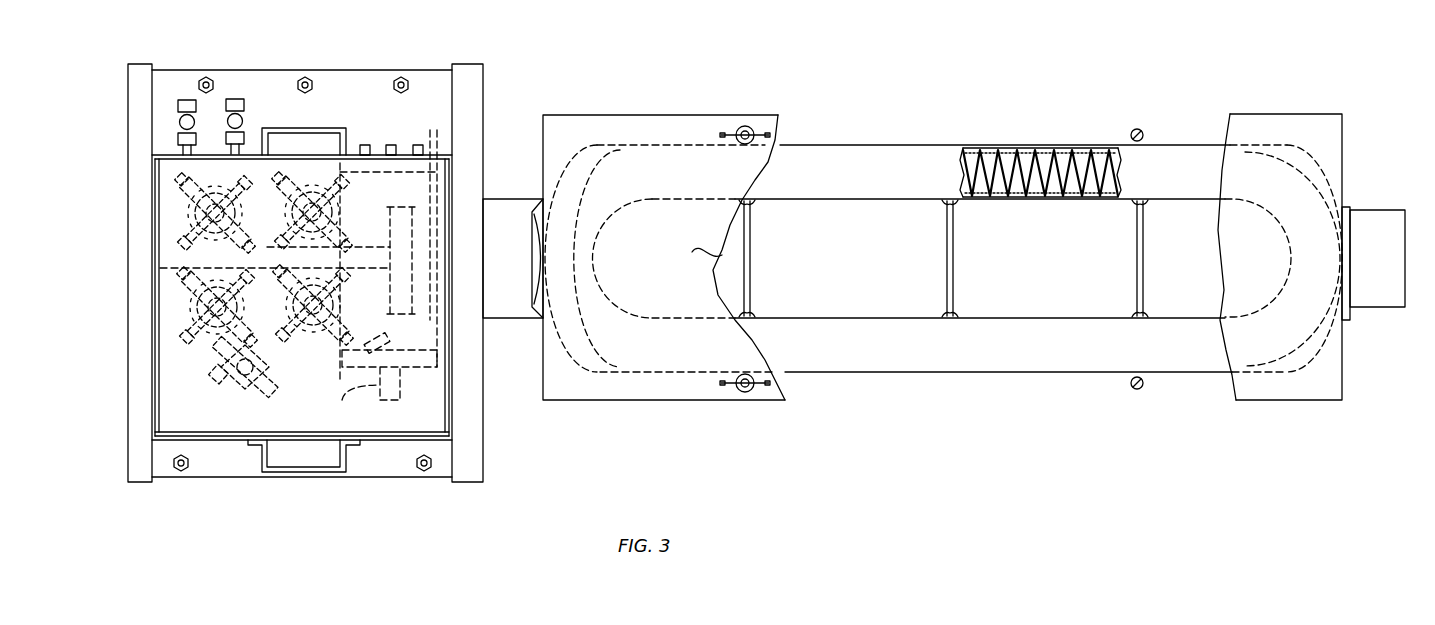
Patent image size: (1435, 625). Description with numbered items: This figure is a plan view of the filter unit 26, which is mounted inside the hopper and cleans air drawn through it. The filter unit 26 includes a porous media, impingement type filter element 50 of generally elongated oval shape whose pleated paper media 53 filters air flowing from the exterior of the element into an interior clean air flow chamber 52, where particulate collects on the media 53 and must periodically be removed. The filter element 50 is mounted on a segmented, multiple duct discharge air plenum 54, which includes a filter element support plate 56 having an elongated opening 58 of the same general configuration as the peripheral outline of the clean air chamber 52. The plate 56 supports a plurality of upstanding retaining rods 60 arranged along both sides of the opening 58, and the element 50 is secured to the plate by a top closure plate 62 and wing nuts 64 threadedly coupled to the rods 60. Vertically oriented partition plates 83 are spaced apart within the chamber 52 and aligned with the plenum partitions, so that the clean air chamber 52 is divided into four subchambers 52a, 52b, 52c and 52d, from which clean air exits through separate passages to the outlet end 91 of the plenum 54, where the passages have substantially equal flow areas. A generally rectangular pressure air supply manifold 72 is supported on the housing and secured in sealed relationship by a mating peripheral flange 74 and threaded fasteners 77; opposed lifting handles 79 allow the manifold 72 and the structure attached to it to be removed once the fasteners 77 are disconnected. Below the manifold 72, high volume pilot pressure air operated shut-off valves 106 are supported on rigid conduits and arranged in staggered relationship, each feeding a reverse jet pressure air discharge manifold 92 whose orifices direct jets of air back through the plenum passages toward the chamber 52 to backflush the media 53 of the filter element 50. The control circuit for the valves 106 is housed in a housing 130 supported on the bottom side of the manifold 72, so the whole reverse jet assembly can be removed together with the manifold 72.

The filter unit 26 is at (690, 90).
The filter element 50 is at (993, 148).
The interior clean air flow chamber 52 is at (939, 267).
The subchamber 52a is at (688, 253).
The subchamber 52b is at (870, 277).
The subchamber 52c is at (1056, 287).
The subchamber 52d is at (1196, 277).
The pleated paper media 53 is at (1045, 165).
The discharge air plenum 54 is at (525, 322).
The filter element support plate 56 is at (578, 362).
The elongated opening 58 is at (833, 307).
The retaining rods 60 is at (752, 128).
The top closure plate 62 is at (617, 400).
The wing nuts 64 is at (745, 126).
The pressure air supply manifold 72 is at (390, 418).
The peripheral flange 74 is at (232, 468).
The threaded fasteners 77 is at (181, 471).
The lifting handles 79 is at (294, 127).
The partition plates 83 is at (749, 253).
The outlet end 91 is at (430, 135).
The reverse jet pressure air discharge manifold 92 is at (412, 237).
The shut-off valve 106 is at (310, 165).
The housing 130 is at (405, 372).